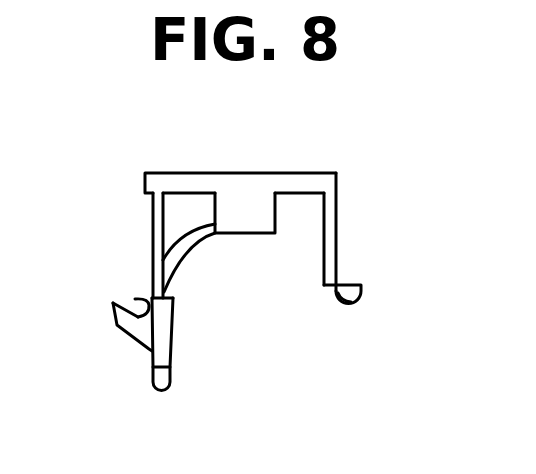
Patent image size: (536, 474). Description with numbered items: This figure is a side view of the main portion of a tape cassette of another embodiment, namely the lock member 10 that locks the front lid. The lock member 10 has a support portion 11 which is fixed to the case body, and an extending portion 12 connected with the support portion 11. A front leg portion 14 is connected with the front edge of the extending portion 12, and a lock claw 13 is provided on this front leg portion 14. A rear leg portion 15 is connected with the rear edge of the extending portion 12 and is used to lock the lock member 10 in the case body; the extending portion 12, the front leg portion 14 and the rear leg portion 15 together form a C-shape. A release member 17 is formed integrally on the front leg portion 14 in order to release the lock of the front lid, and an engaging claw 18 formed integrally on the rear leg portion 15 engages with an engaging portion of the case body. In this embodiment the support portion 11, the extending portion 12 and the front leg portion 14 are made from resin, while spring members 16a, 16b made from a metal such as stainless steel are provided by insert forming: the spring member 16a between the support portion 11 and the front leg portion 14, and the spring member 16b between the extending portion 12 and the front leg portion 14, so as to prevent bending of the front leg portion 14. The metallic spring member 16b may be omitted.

The lock member 10 is at (315, 125).
The support portion 11 is at (248, 213).
The extending portion 12 is at (184, 187).
The lock claw 13 is at (118, 320).
The front leg portion 14 is at (155, 308).
The rear leg portion 15 is at (331, 238).
The spring member 16a is at (154, 218).
The spring member 16b is at (197, 242).
The release member 17 is at (172, 380).
The engaging claw 18 is at (340, 303).